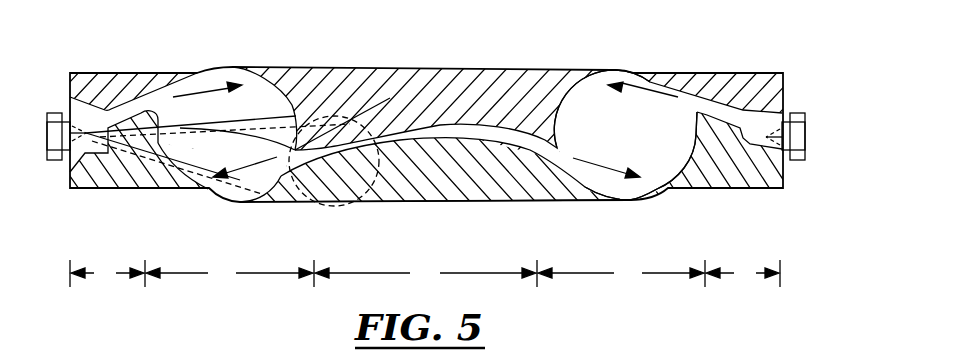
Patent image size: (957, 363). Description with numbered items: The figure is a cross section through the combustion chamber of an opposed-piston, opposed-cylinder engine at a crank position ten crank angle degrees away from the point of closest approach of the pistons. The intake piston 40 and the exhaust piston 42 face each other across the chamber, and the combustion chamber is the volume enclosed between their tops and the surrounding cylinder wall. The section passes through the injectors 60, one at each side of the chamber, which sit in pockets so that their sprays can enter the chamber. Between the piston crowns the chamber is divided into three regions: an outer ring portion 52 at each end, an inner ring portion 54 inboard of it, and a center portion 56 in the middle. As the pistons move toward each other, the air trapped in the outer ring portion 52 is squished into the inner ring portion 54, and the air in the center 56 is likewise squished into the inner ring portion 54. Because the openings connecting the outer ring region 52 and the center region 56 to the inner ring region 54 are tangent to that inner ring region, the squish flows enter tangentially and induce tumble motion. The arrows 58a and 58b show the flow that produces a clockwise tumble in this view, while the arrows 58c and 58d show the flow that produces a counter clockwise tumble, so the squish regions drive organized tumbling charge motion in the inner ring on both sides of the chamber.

The intake piston 40 is at (468, 85).
The exhaust piston 42 is at (468, 200).
The outer ring portion 52 is at (425, 273).
The inner ring portion 54 is at (425, 273).
The center region 56 is at (425, 273).
The arrow 58a is at (192, 85).
The arrow 58b is at (257, 163).
The arrow 58c is at (657, 92).
The arrow 58d is at (595, 165).
The injector 60 is at (50, 118).